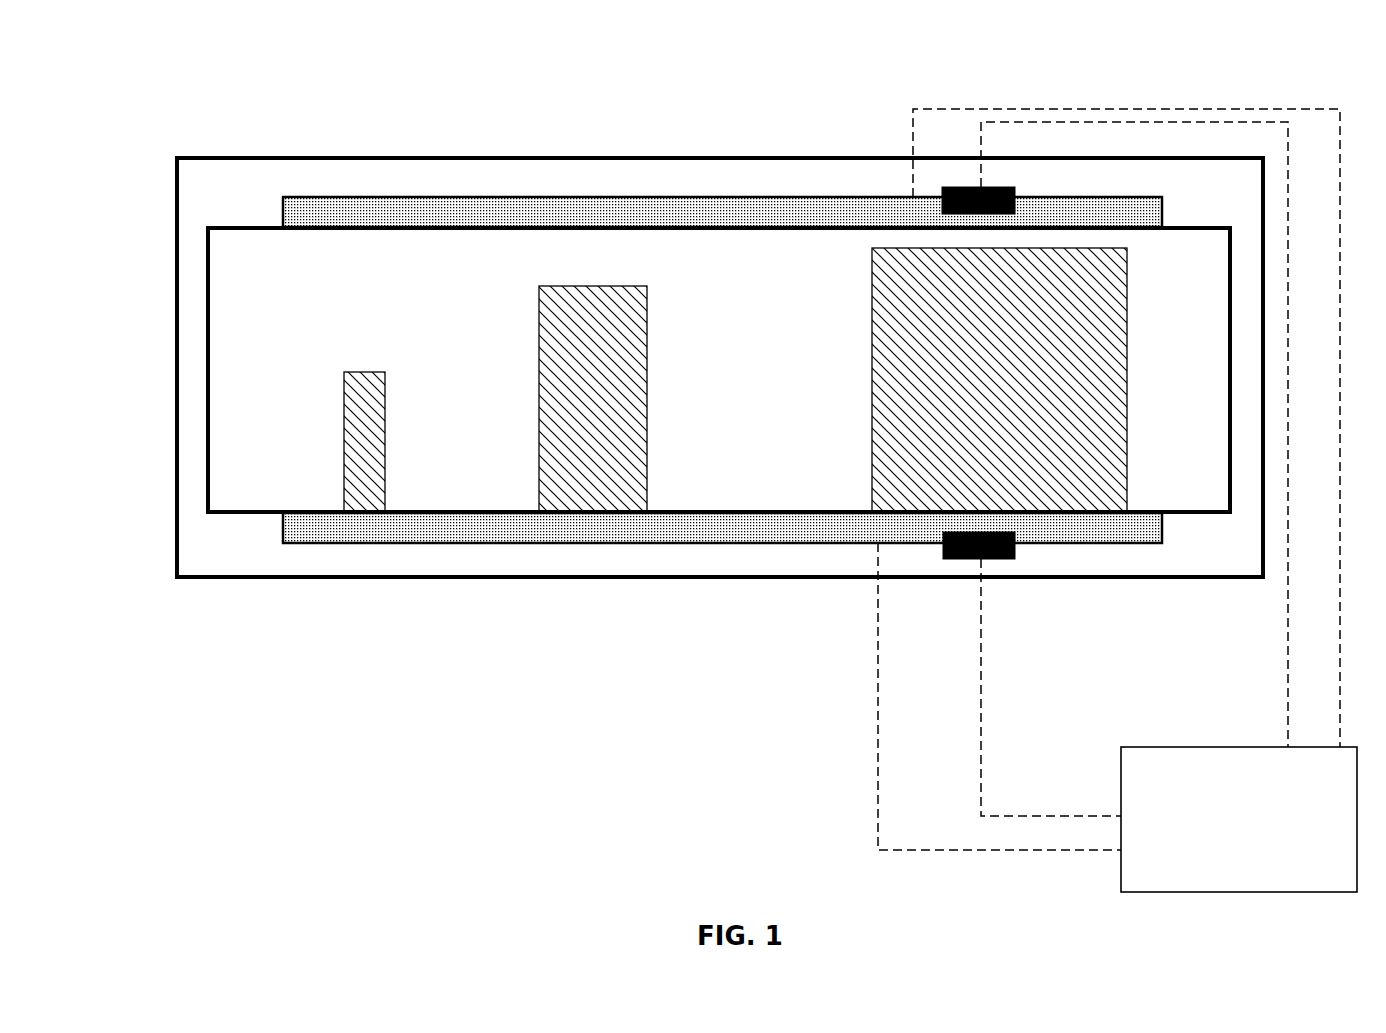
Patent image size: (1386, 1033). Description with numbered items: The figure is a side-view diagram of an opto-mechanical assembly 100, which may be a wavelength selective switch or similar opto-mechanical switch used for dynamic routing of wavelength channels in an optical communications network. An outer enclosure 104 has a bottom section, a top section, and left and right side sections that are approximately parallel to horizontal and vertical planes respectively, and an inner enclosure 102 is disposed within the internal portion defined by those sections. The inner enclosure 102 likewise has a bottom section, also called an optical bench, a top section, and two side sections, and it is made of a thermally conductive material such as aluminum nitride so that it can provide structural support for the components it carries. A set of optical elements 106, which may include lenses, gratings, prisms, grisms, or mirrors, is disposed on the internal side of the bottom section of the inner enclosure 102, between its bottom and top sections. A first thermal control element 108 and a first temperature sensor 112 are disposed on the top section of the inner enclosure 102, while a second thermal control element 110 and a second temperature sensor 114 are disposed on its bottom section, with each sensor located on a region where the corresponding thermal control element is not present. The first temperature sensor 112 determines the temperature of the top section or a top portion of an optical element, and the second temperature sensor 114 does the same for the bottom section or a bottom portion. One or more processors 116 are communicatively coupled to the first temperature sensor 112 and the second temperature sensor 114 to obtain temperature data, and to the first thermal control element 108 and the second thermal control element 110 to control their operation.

The opto-mechanical assembly 100 is at (262, 62).
The inner enclosure 102 is at (253, 513).
The outer enclosure 104 is at (418, 578).
The set of optical elements 106 is at (870, 287).
The first thermal control element 108 is at (695, 222).
The second thermal control element 110 is at (723, 520).
The first temperature sensor 112 is at (940, 188).
The second temperature sensor 114 is at (1018, 555).
The one or more processors 116 is at (1117, 500).